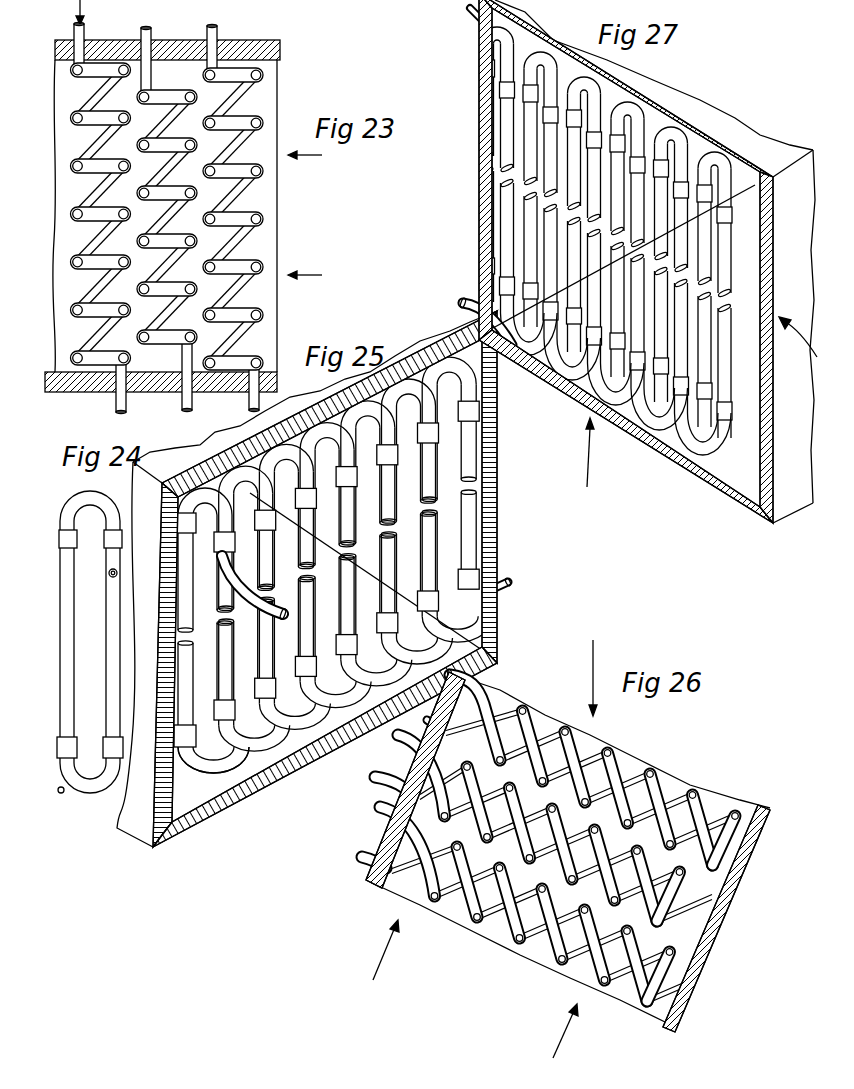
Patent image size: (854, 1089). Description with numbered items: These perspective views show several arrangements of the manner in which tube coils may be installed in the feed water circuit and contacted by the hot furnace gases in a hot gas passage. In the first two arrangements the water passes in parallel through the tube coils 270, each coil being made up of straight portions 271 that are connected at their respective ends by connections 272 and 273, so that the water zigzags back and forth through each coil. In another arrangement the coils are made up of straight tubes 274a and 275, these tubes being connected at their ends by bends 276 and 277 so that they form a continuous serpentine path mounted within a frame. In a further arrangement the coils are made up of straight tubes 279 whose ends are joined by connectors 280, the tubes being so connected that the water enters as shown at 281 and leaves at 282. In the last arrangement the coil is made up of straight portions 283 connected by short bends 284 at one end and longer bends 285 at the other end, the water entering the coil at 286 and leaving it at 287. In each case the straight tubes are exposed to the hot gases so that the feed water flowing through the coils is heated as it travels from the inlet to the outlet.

In FIG. 23, the tube coil 270 is at (236, 173).
In FIG. 24, the tube coil 270 is at (82, 645).
In FIG. 24, the straight portion 271 is at (68, 597).
In FIG. 23, the connection 272 is at (108, 292).
In FIG. 24, the connection 272 is at (88, 795).
In FIG. 23, the connection 273 is at (103, 326).
In FIG. 24, the connection 273 is at (84, 504).
In FIG. 25, the tube leg 274a is at (254, 608).
In FIG. 25, the straight tube 275 is at (225, 655).
In FIG. 25, the bend 276 is at (218, 766).
In FIG. 25, the bend 277 is at (253, 453).
In FIG. 26, the straight tube 279 is at (560, 752).
In FIG. 26, the connector 280 is at (632, 783).
In FIG. 26, the water inlet 281 is at (478, 700).
In FIG. 26, the water outlet 282 is at (470, 728).
In FIG. 27, the straight portion 283 is at (527, 210).
In FIG. 27, the short bend 284 is at (683, 130).
In FIG. 27, the longer bend 285 is at (580, 367).
In FIG. 27, the water inlet 286 is at (475, 22).
In FIG. 27, the water outlet 287 is at (471, 312).